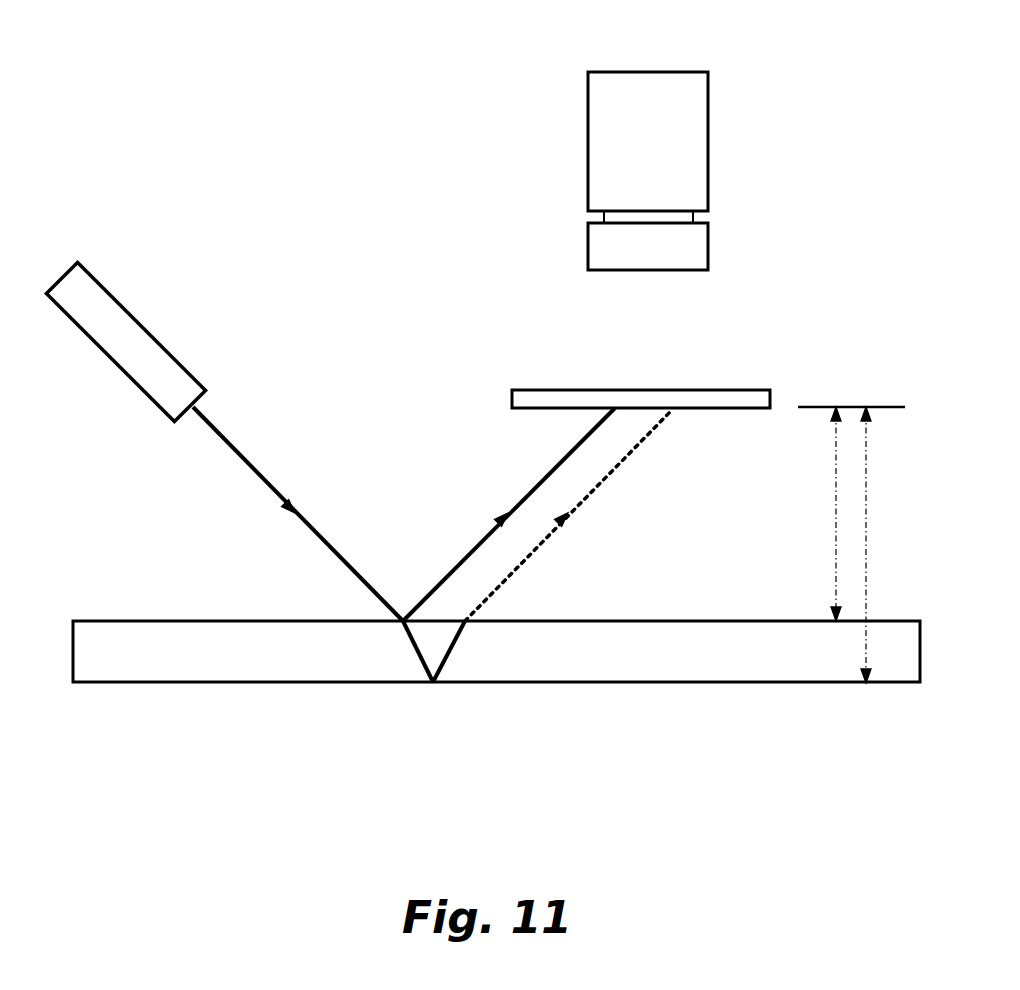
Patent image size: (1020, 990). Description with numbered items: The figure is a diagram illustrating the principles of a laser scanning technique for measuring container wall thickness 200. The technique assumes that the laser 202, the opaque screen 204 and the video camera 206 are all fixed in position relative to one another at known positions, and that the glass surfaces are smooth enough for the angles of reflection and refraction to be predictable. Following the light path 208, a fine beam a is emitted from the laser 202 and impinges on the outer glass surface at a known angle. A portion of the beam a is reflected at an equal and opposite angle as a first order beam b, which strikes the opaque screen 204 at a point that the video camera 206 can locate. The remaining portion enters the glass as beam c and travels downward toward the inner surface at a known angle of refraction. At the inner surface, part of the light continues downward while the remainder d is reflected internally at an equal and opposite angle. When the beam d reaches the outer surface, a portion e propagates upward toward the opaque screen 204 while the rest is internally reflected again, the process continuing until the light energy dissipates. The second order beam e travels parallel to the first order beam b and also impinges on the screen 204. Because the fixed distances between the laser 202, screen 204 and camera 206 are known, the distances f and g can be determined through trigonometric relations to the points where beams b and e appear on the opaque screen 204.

The container wall thickness 200 is at (733, 668).
The laser 202 is at (117, 288).
The opaque screen 204 is at (697, 388).
The video camera 206 is at (585, 125).
The light path 208 is at (250, 468).
The fine beam a is at (273, 478).
The first order beam b is at (532, 480).
The refracted beam in glass c is at (412, 655).
The internally reflected beam d is at (453, 657).
The second order beam e is at (622, 480).
The distance to first order beam point f is at (826, 514).
The distance to second order beam point g is at (875, 545).